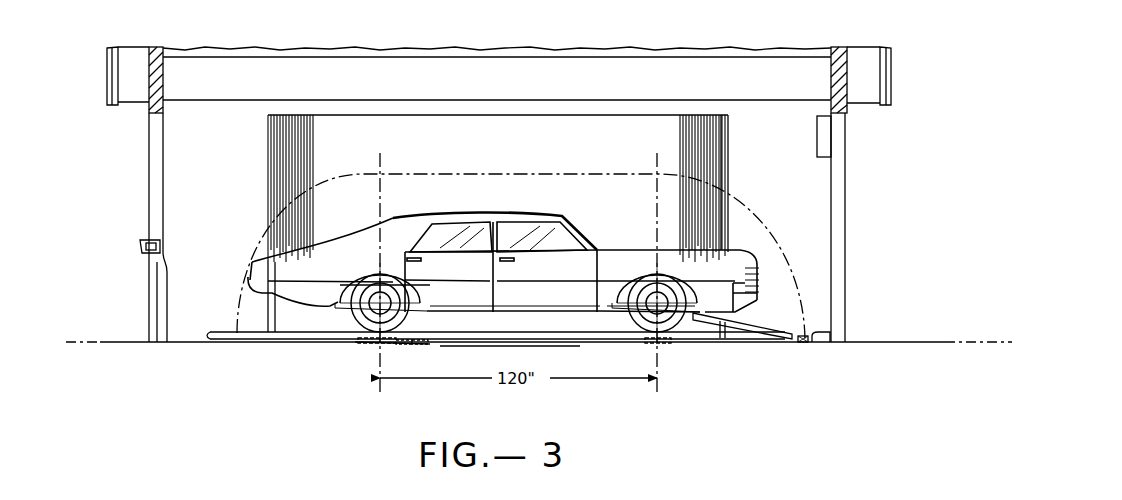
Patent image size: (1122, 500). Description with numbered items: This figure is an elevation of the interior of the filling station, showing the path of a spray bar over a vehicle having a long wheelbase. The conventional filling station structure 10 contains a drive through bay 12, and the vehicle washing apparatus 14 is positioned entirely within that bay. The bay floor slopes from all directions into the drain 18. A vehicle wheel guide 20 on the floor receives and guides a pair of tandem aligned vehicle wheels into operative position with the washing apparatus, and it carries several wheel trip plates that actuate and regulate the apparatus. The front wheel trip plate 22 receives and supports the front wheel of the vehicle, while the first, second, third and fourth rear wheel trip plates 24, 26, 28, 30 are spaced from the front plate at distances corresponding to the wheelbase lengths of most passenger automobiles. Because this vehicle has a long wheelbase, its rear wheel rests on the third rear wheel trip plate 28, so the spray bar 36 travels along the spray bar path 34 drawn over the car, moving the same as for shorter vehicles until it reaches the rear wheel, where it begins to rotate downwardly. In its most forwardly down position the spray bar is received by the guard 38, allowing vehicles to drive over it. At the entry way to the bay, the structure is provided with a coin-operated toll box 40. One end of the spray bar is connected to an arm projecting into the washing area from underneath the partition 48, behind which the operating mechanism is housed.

The filling station structure 10 is at (893, 50).
The drive through bay 12 is at (190, 108).
The vehicle washing apparatus 14 is at (732, 168).
The drain 18 is at (565, 346).
The vehicle wheel guide 20 is at (303, 337).
The front wheel trip plate 22 is at (668, 343).
The first rear wheel trip plate 24 is at (425, 346).
The second rear wheel trip plate 26 is at (392, 343).
The third rear wheel trip plate 28 is at (383, 345).
The fourth rear wheel trip plate 30 is at (360, 341).
The spray bar path 34 is at (492, 174).
The spray bar 36 is at (745, 328).
The guard 38 is at (820, 333).
The coin-operated toll box 40 is at (140, 245).
The partition 48 is at (722, 128).